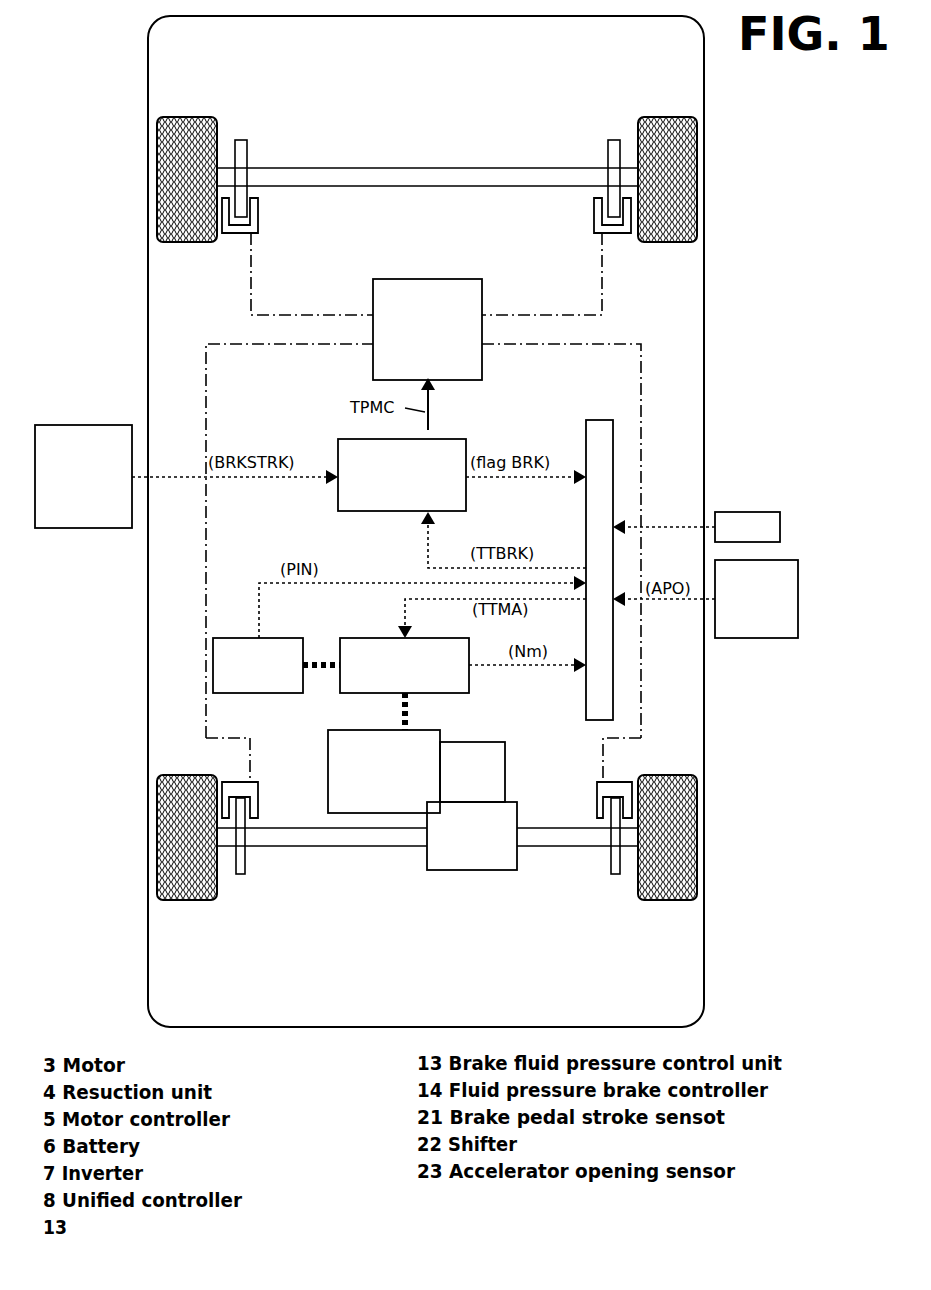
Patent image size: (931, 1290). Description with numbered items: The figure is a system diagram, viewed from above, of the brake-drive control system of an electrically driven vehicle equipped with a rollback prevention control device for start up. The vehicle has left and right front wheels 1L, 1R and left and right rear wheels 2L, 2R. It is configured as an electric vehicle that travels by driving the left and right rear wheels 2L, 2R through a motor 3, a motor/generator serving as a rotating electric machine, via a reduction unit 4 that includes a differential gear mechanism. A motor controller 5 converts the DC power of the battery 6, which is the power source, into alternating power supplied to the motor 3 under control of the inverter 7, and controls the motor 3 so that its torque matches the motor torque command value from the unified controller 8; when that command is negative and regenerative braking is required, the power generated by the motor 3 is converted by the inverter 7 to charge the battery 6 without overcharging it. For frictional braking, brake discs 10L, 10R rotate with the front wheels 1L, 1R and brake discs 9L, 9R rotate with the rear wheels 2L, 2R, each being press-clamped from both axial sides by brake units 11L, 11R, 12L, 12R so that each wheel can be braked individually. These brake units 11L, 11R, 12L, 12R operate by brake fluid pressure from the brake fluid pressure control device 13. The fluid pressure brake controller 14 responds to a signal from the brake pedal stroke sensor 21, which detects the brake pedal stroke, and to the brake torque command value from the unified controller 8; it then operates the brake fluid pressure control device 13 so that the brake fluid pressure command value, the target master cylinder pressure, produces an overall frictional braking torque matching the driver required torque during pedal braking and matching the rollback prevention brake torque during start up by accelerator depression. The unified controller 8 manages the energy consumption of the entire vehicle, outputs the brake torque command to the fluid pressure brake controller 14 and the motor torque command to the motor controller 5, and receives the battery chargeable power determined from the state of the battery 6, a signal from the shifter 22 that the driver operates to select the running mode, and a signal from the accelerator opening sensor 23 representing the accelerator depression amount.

The left front wheel 1L is at (194, 117).
The right front wheel 1R is at (660, 117).
The left rear wheel 2L is at (185, 900).
The right rear wheel 2R is at (668, 900).
The motor 3 is at (493, 742).
The reduction unit 4 is at (492, 870).
The motor controller 5 is at (351, 638).
The battery 6 is at (227, 638).
The inverter 7 is at (327, 740).
The unified controller 8 is at (607, 420).
The brake disc 9L is at (240, 874).
The brake disc 9R is at (615, 874).
The brake disc 10L is at (241, 140).
The brake disc 10R is at (614, 140).
The brake unit 11L is at (259, 221).
The brake unit 11R is at (594, 220).
The brake unit 12L is at (259, 806).
The brake unit 12R is at (586, 794).
The brake fluid pressure control device 13 is at (462, 279).
The fluid pressure brake controller 14 is at (476, 438).
The brake pedal stroke sensor 21 is at (84, 425).
The shifter 22 is at (760, 512).
The accelerator opening sensor 23 is at (757, 638).